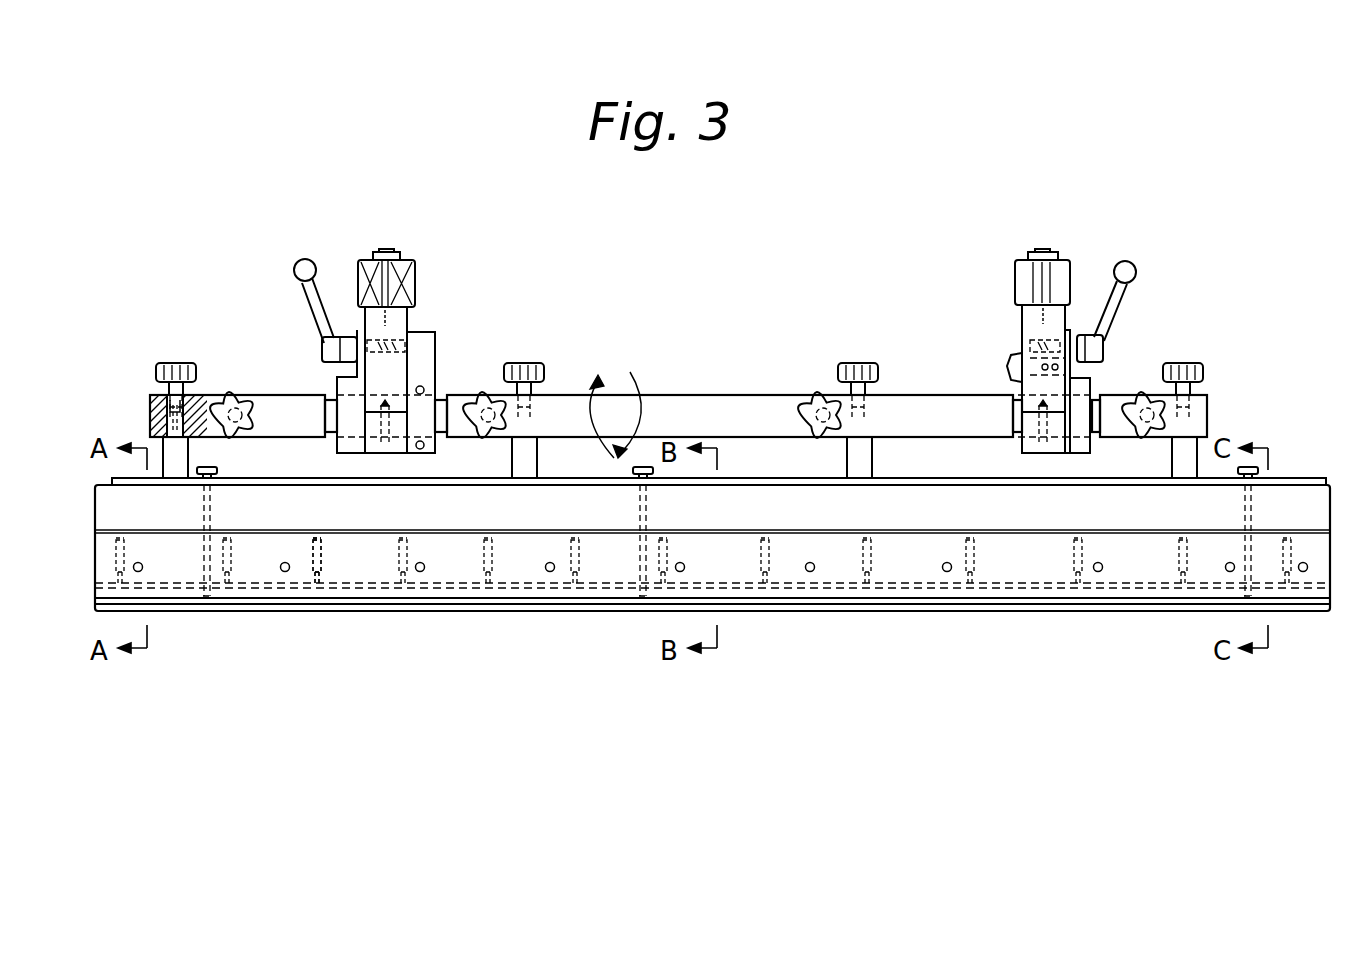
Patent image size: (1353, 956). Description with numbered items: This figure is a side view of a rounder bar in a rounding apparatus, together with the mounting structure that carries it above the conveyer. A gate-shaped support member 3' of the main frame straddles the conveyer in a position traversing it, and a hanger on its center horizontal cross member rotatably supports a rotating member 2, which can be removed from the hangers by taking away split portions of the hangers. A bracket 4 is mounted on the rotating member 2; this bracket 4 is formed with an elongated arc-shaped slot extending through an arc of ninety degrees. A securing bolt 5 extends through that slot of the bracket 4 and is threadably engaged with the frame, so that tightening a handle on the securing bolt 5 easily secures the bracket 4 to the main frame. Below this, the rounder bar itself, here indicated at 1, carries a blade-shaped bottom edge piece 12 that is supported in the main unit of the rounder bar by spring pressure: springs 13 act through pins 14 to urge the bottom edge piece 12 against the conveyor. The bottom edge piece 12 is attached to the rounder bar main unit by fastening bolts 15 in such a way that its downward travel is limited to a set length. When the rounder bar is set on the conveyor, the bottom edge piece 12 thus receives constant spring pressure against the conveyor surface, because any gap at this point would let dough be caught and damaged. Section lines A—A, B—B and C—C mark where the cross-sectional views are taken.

The base plate 1 is at (1286, 479).
The rotating member 2 is at (740, 402).
The gate-shaped support member 3' is at (410, 351).
The bracket 4 is at (353, 368).
The securing bolt 5 is at (323, 352).
The bottom edge piece 12 is at (495, 605).
The spring 13 is at (321, 555).
The pin 14 is at (310, 601).
The fastening bolt 15 is at (218, 470).